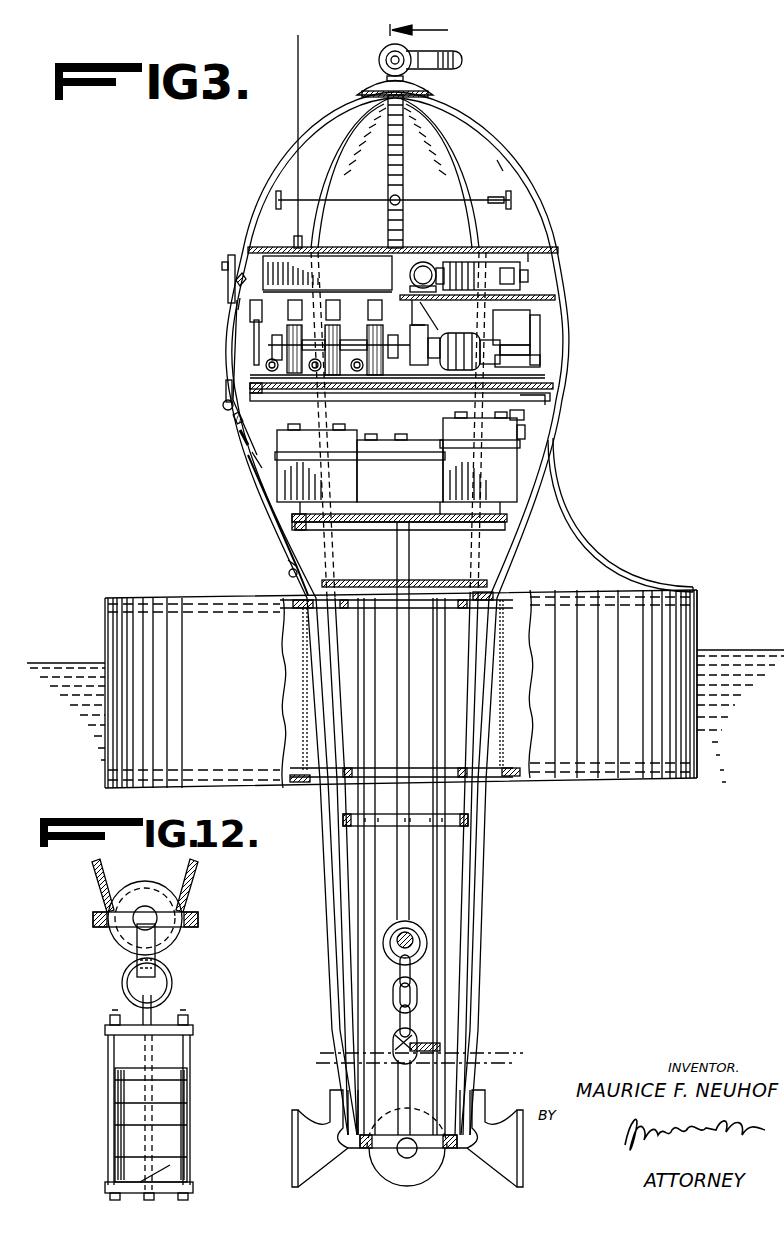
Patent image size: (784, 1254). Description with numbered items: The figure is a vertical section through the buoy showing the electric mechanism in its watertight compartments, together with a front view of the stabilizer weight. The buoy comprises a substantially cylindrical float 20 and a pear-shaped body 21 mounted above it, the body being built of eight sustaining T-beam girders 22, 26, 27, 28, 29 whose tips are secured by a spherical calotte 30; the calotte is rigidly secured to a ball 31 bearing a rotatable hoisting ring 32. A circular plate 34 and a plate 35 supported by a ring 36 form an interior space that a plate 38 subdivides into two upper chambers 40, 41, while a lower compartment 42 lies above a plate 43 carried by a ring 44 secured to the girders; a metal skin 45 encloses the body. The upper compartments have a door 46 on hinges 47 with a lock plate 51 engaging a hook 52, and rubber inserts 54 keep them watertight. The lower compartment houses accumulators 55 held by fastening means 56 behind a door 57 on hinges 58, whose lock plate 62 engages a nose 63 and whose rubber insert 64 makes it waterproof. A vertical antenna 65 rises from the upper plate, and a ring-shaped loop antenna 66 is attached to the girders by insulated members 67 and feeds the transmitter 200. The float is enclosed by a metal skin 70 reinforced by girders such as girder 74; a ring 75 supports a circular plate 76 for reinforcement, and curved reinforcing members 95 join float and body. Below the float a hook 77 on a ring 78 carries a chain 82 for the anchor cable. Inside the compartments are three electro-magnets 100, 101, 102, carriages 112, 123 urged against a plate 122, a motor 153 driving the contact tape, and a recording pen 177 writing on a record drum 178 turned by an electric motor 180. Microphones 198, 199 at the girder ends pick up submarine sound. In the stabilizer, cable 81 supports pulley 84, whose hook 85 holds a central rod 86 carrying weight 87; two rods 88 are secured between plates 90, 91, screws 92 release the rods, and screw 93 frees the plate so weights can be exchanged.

In FIG. 3, the float 20 is at (700, 632).
In FIG. 3, the pear-shaped body 21 is at (600, 316).
In FIG. 3, the sustaining girder 22 is at (500, 168).
In FIG. 3, the sustaining girder 26 is at (282, 167).
In FIG. 3, the sustaining girder 27 is at (330, 162).
In FIG. 3, the sustaining girder 28 is at (403, 170).
In FIG. 3, the sustaining girder 29 is at (462, 180).
In FIG. 3, the spherical calotte 30 is at (368, 87).
In FIG. 3, the ball 31 is at (379, 60).
In FIG. 3, the hoisting ring 32 is at (445, 54).
In FIG. 3, the circular plate 34 is at (347, 250).
In FIG. 3, the plate 35 is at (375, 389).
In FIG. 3, the ring 36 is at (258, 393).
In FIG. 3, the plate 38 is at (528, 297).
In FIG. 3, the upper chamber 40 is at (528, 255).
In FIG. 3, the upper chamber 41 is at (540, 320).
In FIG. 3, the lower compartment 42 is at (524, 415).
In FIG. 3, the plate 43 is at (384, 520).
In FIG. 3, the ring 44 is at (298, 524).
In FIG. 3, the metal skin 45 is at (545, 397).
In FIG. 3, the door 46 is at (232, 348).
In FIG. 3, the hinges 47 is at (226, 407).
In FIG. 3, the lock plate 51 is at (238, 268).
In FIG. 3, the hook 52 is at (228, 260).
In FIG. 3, the rubber inserts 54 is at (240, 282).
In FIG. 3, the accumulators 55 is at (505, 470).
In FIG. 3, the fastening means 56 is at (525, 432).
In FIG. 3, the door 57 is at (268, 518).
In FIG. 3, the hinges 58 is at (288, 570).
In FIG. 3, the lock plate 62 is at (244, 438).
In FIG. 3, the nose 63 is at (236, 420).
In FIG. 3, the rubber insert 64 is at (256, 460).
In FIG. 3, the vertical antenna 65 is at (297, 99).
In FIG. 3, the loop antenna 66 is at (500, 195).
In FIG. 3, the insulated members 67 is at (276, 202).
In FIG. 3, the metal skin 70 is at (105, 620).
In FIG. 3, the sustaining girder 74 is at (286, 606).
In FIG. 3, the ring 75 is at (490, 584).
In FIG. 3, the circular plate 76 is at (415, 582).
In FIG. 3, the hook 77 is at (410, 903).
In FIG. 3, the ring 78 is at (470, 820).
In FIG. 3, the chain 82 is at (418, 993).
In FIG. 3, the curved reinforcing members 95 is at (592, 546).
In FIG. 3, the electro-magnet 100 is at (510, 322).
In FIG. 3, the electro-magnet 101 is at (522, 345).
In FIG. 3, the electro-magnet 102 is at (527, 360).
In FIG. 3, the carriage 112 is at (340, 340).
In FIG. 3, the plate 122 is at (270, 340).
In FIG. 3, the carriage 123 is at (300, 338).
In FIG. 3, the motor 153 is at (466, 335).
In FIG. 3, the recording pen 177 is at (416, 265).
In FIG. 3, the record drum 178 is at (486, 260).
In FIG. 3, the electric motor 180 is at (508, 276).
In FIG. 3, the microphone 198 is at (523, 1146).
In FIG. 3, the microphone 199 is at (292, 1152).
In FIG. 3, the transmitter 200 is at (327, 274).
In FIG. 12, the cable 81 is at (96, 876).
In FIG. 12, the pulley 84 is at (140, 886).
In FIG. 12, the hook 85 is at (137, 955).
In FIG. 12, the central rod 86 is at (150, 1050).
In FIG. 12, the weight 87 is at (187, 1115).
In FIG. 12, the rods 88 is at (108, 1054).
In FIG. 12, the plate 90 is at (105, 1186).
In FIG. 12, the plate 91 is at (136, 1025).
In FIG. 12, the screws 92 is at (108, 1022).
In FIG. 12, the screw 93 is at (170, 1165).